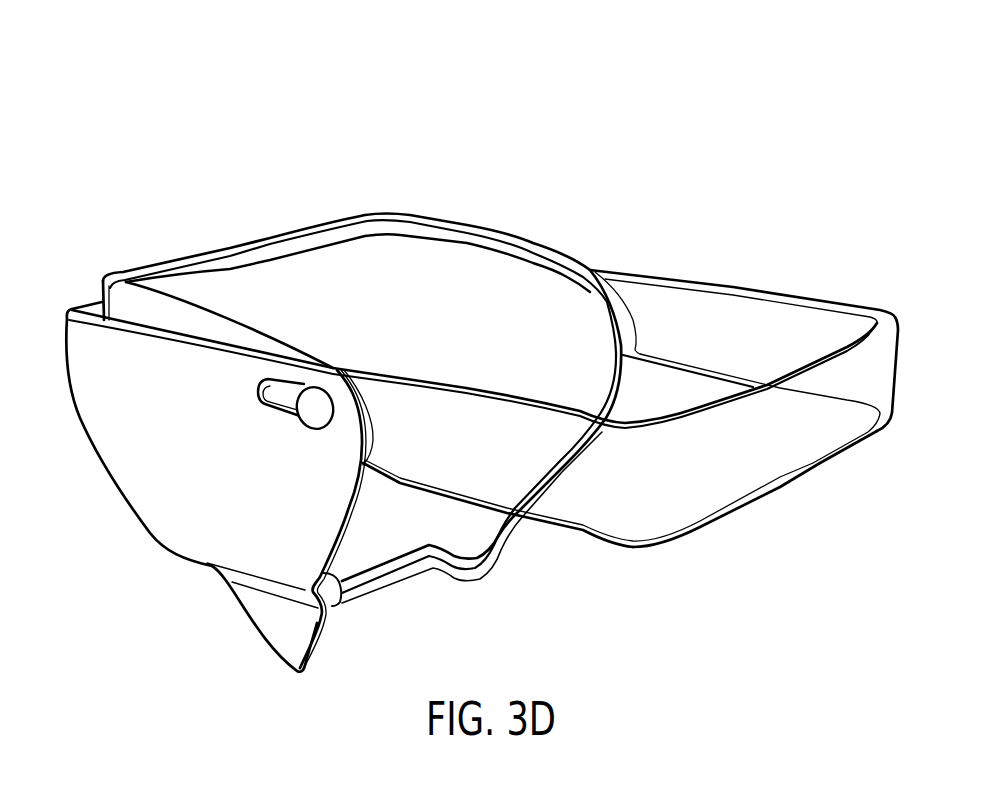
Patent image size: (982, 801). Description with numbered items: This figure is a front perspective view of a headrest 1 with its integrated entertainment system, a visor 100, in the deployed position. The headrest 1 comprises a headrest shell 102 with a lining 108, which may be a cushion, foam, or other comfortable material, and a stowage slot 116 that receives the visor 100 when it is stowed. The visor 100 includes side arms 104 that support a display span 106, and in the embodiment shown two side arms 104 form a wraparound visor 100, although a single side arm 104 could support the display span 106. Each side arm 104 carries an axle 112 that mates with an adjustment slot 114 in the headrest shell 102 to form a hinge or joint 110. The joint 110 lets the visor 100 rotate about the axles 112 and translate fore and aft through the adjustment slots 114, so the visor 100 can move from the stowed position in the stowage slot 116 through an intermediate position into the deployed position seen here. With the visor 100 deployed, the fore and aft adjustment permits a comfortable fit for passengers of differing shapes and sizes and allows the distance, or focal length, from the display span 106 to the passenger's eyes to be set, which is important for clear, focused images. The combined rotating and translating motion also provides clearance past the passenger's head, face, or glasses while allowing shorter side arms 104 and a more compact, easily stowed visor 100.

The headrest 1 is at (200, 103).
The visor 100 is at (687, 277).
The headrest shell 102 is at (128, 480).
The side arm 104 is at (800, 320).
The display span 106 is at (797, 468).
The lining 108 is at (447, 254).
The joint 110 is at (334, 360).
The axle 112 is at (312, 413).
The adjustment slot 114 is at (267, 415).
The stowage slot 116 is at (92, 308).